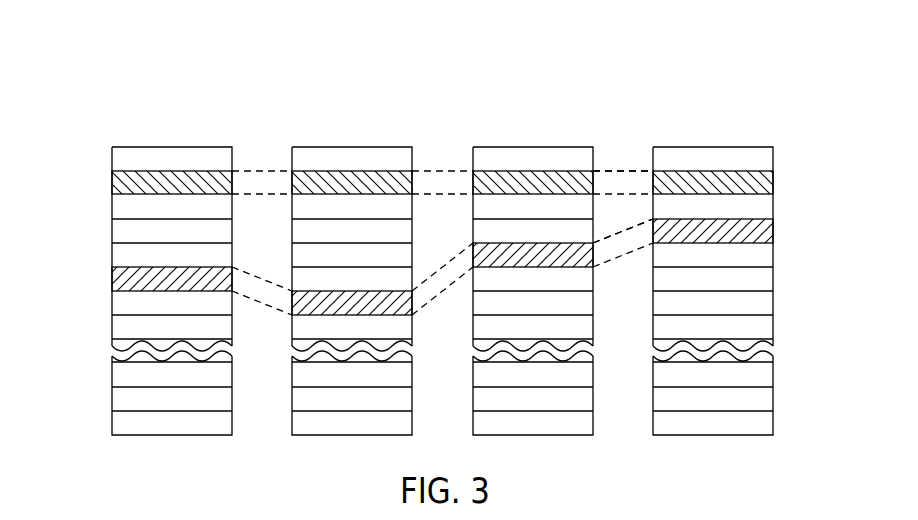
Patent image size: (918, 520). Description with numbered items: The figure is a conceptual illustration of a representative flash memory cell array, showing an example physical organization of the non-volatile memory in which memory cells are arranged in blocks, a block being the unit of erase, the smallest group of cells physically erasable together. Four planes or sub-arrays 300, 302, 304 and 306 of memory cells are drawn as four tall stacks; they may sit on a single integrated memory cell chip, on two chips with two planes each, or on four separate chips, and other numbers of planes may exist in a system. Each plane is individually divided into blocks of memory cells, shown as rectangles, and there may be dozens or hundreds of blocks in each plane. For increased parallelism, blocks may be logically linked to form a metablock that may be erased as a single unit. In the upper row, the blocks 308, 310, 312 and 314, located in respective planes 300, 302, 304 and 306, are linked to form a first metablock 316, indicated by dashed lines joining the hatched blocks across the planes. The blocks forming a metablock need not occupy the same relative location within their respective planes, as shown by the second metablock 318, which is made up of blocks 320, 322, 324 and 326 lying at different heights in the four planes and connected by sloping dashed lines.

The plane 300 is at (141, 260).
The plane 302 is at (336, 260).
The plane 304 is at (506, 260).
The plane 306 is at (744, 260).
The block 308 is at (153, 184).
The block 310 is at (333, 186).
The block 312 is at (515, 182).
The block 314 is at (740, 183).
The first metablock 316 is at (622, 167).
The second metablock 318 is at (625, 226).
The block 320 is at (150, 280).
The block 322 is at (327, 302).
The block 324 is at (520, 252).
The block 326 is at (740, 233).